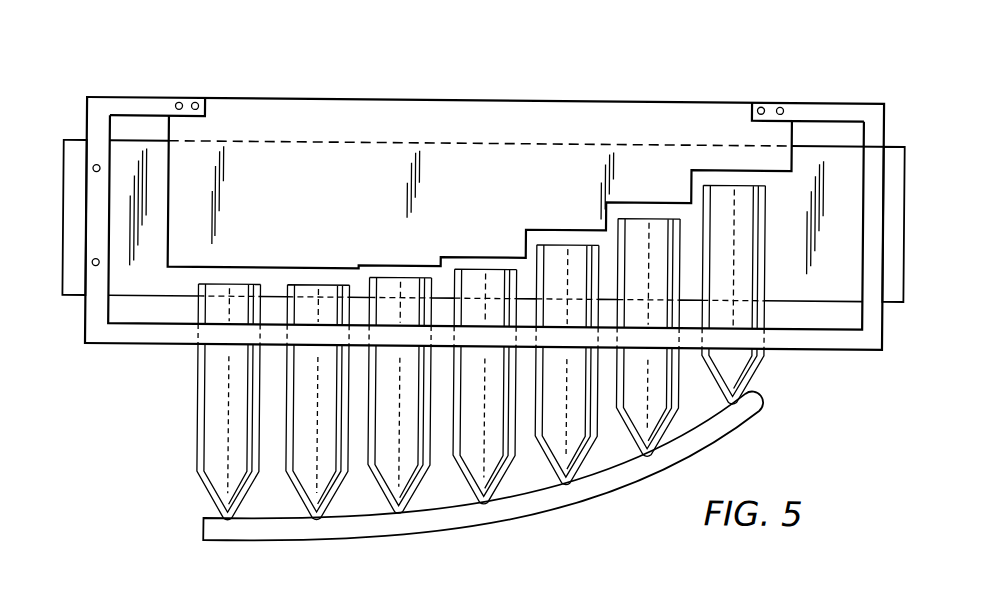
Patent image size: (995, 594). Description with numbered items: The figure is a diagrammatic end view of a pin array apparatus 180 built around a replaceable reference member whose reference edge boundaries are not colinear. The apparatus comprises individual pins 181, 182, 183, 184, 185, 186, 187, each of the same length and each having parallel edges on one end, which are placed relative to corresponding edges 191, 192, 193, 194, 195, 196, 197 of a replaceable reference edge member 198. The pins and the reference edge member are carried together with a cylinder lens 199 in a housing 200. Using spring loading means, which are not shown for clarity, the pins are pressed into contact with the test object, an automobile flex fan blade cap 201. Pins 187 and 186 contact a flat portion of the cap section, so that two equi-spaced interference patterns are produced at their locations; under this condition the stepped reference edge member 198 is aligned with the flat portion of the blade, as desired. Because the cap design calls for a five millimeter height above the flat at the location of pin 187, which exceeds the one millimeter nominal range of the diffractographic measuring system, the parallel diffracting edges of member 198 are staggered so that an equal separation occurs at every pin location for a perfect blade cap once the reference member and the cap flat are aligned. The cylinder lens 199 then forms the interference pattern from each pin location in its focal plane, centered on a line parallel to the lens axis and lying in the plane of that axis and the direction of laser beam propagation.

The pin array apparatus 180 is at (176, 386).
The pin 181 is at (707, 371).
The pin 182 is at (620, 414).
The pin 183 is at (559, 461).
The pin 184 is at (469, 477).
The pin 185 is at (387, 493).
The pin 186 is at (298, 495).
The pin 187 is at (208, 495).
The reference edge 191 is at (730, 179).
The reference edge 192 is at (648, 198).
The reference edge 193 is at (577, 226).
The reference edge 194 is at (492, 253).
The reference edge 195 is at (405, 262).
The reference edge 196 is at (330, 238).
The reference edge 197 is at (255, 243).
The replaceable reference edge member 198 is at (714, 98).
The cylinder lens 199 is at (896, 140).
The housing 200 is at (818, 343).
The automobile flex fan blade cap 201 is at (565, 504).